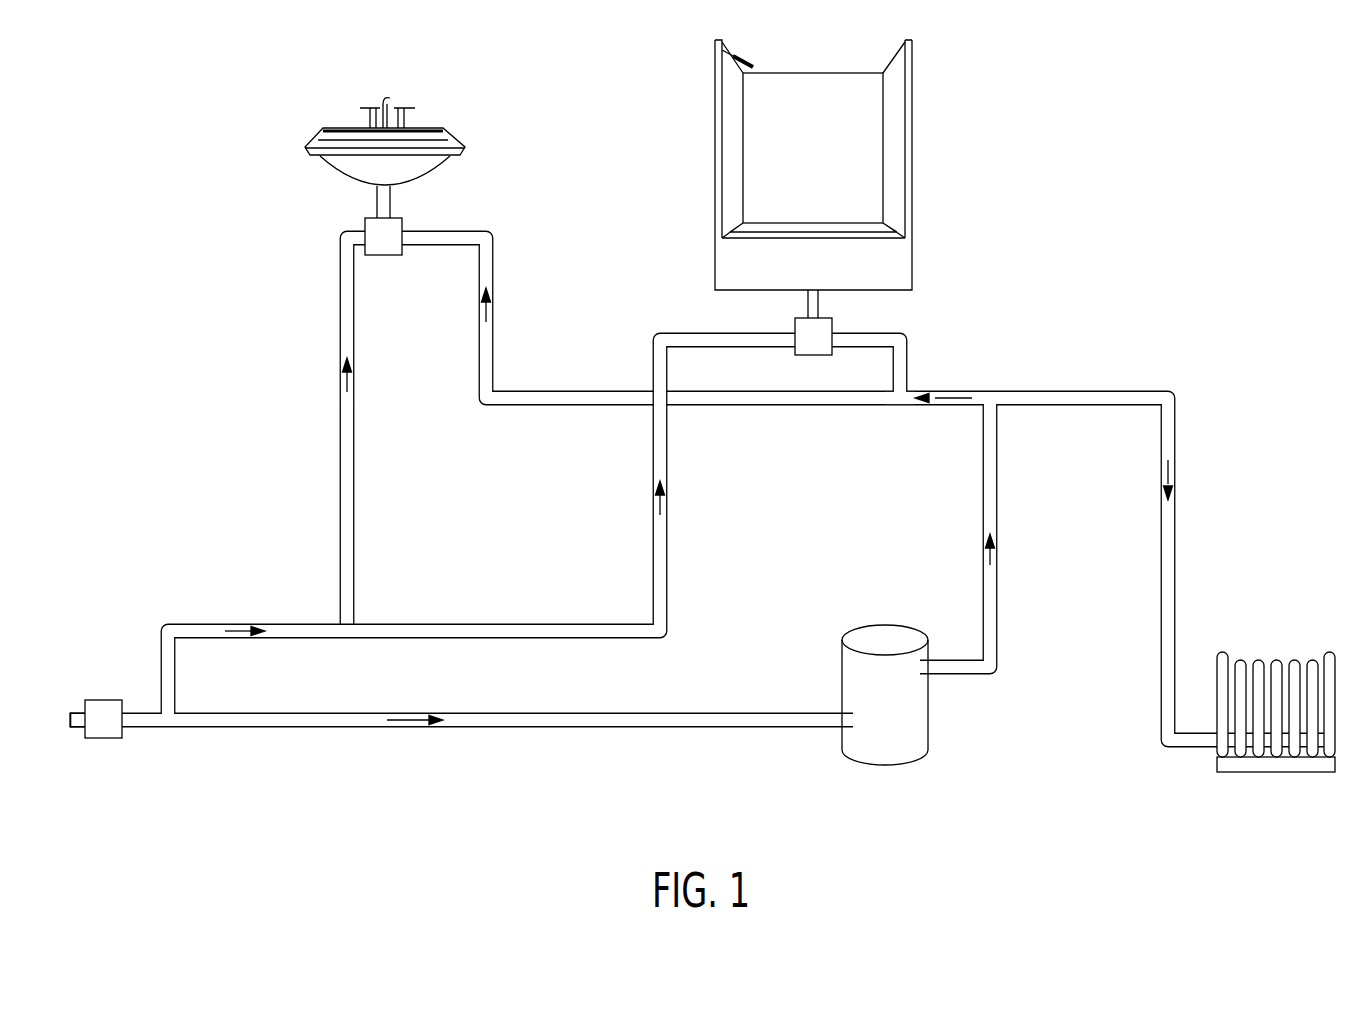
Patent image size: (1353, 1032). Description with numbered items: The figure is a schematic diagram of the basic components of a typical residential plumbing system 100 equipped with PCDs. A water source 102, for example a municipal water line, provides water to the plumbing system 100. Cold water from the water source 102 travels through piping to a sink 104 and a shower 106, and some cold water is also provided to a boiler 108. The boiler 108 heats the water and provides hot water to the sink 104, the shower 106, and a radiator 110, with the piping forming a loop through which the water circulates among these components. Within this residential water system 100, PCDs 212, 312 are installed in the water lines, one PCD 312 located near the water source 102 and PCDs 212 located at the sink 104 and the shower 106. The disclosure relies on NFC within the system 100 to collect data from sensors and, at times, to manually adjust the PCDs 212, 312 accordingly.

The residential plumbing system 100 is at (234, 135).
The water source 102 is at (75, 709).
The sink 104 is at (462, 152).
The shower 106 is at (903, 148).
The boiler 108 is at (912, 738).
The radiator 110 is at (1328, 652).
The PCD 212 is at (404, 230).
The PCD 312 is at (107, 740).